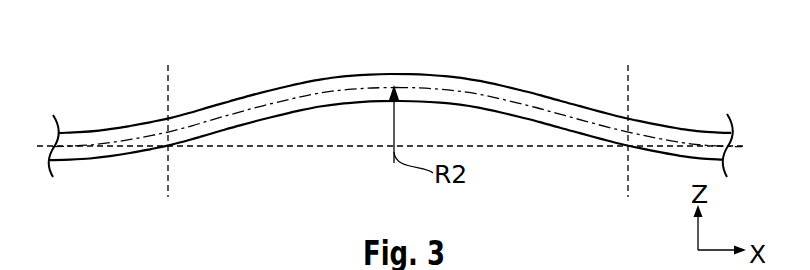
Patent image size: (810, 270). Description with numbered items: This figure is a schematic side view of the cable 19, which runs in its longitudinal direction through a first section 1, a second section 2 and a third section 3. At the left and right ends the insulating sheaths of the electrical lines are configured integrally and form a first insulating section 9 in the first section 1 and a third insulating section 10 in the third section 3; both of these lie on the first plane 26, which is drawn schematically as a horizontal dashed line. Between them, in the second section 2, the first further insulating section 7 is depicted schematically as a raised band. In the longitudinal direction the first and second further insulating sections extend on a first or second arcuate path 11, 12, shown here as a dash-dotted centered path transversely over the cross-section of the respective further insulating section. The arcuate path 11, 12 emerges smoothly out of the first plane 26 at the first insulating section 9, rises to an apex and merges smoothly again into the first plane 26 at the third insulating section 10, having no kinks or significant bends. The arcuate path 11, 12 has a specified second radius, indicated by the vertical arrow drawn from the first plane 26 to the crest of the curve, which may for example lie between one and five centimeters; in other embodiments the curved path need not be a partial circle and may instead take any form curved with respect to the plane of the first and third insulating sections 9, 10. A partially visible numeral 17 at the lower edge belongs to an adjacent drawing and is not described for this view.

The first section 1 is at (123, 118).
The second section 2 is at (356, 61).
The third section 3 is at (644, 110).
The first further insulating section 7 is at (330, 104).
The first insulating section 9 is at (127, 149).
The third insulating section 10 is at (701, 129).
The first arcuate path 11 is at (462, 97).
The second arcuate path 12 is at (462, 97).
The component (partial, adjacent figure) 17 is at (44, 264).
The cable 19 is at (84, 113).
The first plane 26 is at (536, 147).